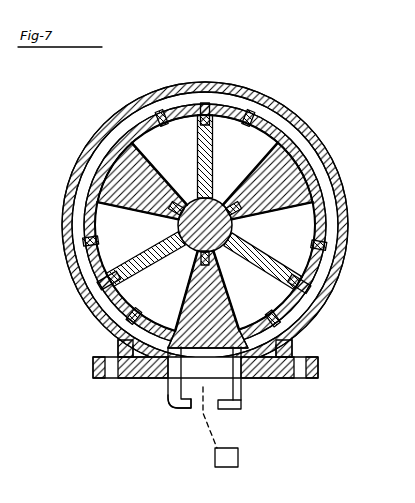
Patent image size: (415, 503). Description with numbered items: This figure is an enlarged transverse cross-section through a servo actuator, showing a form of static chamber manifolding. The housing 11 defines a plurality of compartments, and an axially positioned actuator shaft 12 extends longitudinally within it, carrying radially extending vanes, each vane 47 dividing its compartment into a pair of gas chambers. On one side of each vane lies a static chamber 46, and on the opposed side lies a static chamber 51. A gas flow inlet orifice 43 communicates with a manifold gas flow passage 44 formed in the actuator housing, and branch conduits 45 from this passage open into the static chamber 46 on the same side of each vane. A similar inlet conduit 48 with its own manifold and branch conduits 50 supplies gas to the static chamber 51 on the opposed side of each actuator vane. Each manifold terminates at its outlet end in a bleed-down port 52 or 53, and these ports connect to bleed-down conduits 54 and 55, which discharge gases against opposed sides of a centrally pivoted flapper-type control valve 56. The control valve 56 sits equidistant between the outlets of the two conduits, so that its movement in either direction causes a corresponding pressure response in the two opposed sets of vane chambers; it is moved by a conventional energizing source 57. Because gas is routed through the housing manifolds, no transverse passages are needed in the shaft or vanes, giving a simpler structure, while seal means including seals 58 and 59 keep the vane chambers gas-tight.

The housing 11 is at (115, 119).
The actuator shaft 12 is at (194, 252).
The gas flow inlet orifice 43 is at (273, 374).
The manifold gas flow passage 44 is at (325, 172).
The branch conduits 45 is at (161, 124).
The static chamber 46 is at (170, 308).
The vane 47 is at (198, 168).
The inlet conduit 48 is at (143, 382).
The branch conduits 50 is at (250, 127).
The static chamber 51 is at (258, 292).
The bleed-down port 52 is at (232, 352).
The bleed-down port 53 is at (180, 352).
The bleed-down conduit 54 is at (238, 410).
The bleed-down conduit 55 is at (176, 409).
The control valve 56 is at (203, 416).
The energizing source 57 is at (238, 457).
The seal 58 is at (206, 116).
The seal 59 is at (234, 203).